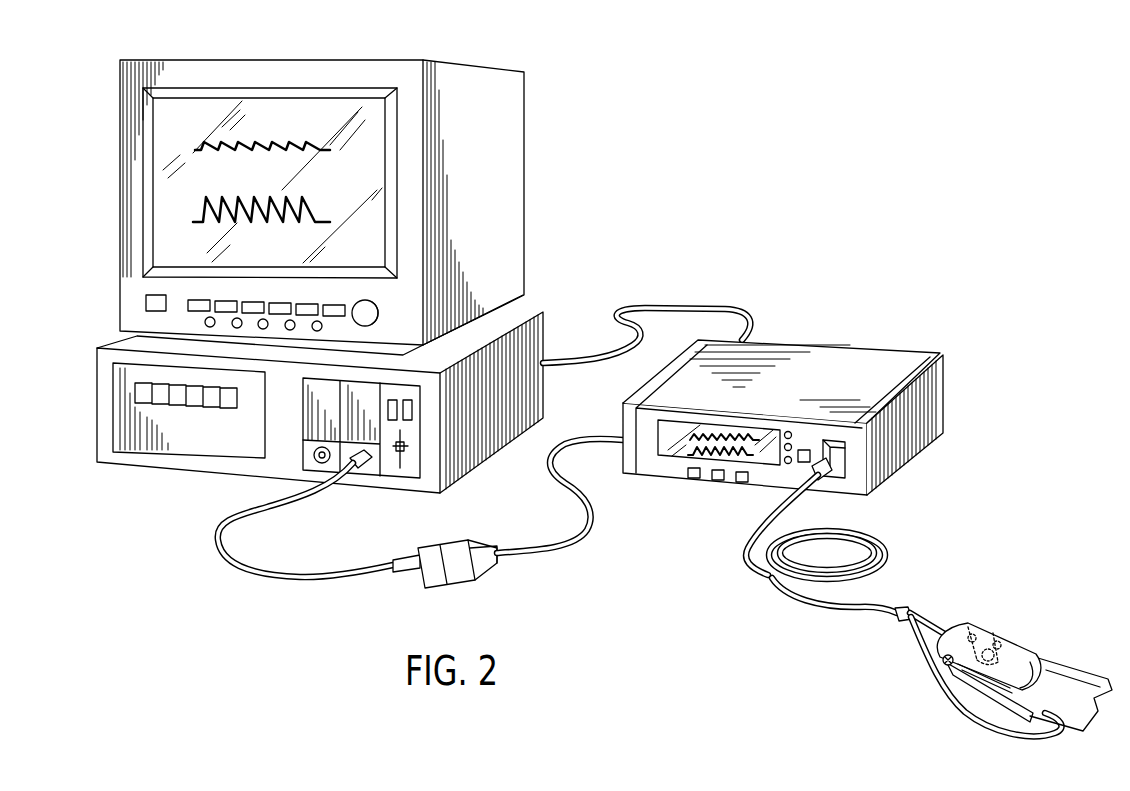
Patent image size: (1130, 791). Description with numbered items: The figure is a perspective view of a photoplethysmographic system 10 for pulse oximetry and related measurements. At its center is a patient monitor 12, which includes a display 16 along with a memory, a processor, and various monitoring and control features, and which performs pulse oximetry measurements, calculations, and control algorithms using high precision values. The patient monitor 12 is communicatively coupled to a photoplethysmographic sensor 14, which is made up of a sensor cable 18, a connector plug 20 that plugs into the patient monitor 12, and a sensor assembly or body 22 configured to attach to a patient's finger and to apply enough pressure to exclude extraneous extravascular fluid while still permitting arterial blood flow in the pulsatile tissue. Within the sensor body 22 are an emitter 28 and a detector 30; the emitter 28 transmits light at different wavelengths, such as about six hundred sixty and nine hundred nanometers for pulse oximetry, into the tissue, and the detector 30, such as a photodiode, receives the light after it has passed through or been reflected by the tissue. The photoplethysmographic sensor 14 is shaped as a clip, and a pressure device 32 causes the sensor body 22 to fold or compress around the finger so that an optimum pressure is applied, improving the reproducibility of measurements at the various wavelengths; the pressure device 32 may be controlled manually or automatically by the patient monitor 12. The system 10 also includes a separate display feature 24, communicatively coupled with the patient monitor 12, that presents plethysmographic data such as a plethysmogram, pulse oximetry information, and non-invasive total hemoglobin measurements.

The system 10 is at (803, 198).
The patient monitor 12 is at (848, 347).
The photoplethysmographic sensor 14 is at (1036, 649).
The display 16 is at (685, 459).
The sensor cable 18 is at (775, 594).
The connector plug 20 is at (845, 473).
The sensor assembly or body 22 is at (992, 633).
The separate display feature 24 is at (478, 68).
The emitter 28 is at (970, 626).
The detector 30 is at (1000, 637).
The pressure device 32 is at (938, 656).